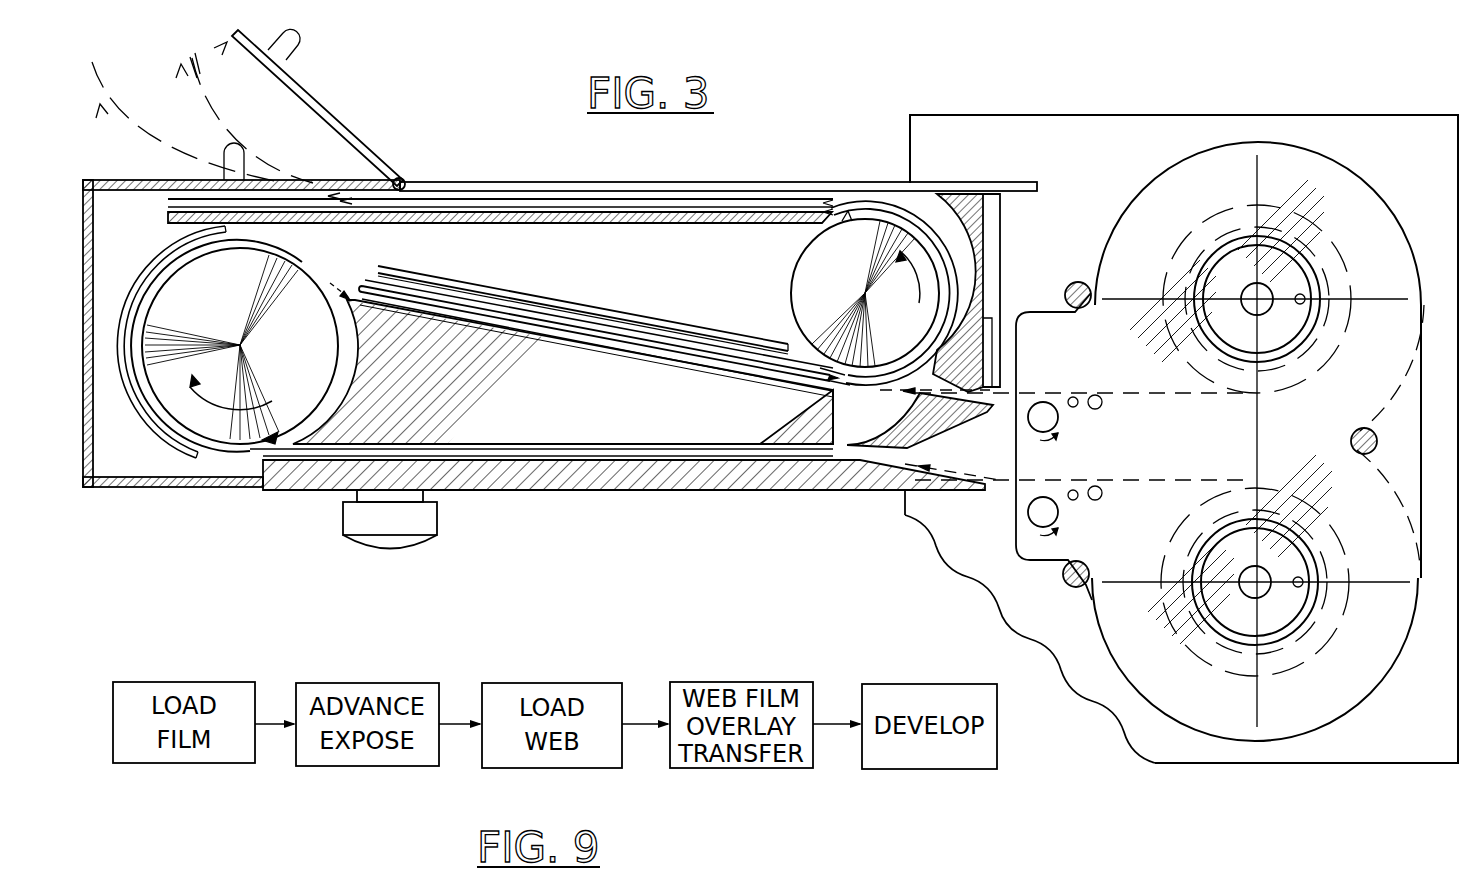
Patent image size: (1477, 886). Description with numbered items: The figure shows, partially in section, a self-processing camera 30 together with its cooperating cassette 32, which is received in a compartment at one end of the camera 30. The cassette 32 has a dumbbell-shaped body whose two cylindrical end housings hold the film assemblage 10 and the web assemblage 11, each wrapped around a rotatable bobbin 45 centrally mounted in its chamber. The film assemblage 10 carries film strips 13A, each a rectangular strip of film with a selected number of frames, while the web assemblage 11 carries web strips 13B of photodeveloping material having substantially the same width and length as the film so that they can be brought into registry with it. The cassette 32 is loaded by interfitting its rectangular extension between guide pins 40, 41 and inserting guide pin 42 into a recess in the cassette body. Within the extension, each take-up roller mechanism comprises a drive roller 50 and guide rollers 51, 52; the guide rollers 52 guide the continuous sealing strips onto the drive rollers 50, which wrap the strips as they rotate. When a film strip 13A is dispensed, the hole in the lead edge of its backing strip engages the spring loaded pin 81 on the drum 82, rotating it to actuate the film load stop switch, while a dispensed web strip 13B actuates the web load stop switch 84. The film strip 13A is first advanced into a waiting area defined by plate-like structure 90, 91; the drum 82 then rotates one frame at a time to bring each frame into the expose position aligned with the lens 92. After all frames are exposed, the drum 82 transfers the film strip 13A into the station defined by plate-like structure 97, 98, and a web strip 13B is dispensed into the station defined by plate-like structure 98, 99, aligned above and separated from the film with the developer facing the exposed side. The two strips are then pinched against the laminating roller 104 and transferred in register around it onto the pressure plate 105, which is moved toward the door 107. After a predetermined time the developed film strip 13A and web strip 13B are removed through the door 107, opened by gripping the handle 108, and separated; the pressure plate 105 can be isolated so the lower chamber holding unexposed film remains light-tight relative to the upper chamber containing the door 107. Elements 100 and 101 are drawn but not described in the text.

The camera 30 is at (835, 108).
The cassette 32 is at (1340, 180).
The film assemblage 10 is at (1172, 480).
The web assemblage 11 is at (1190, 393).
The film strip 13A is at (688, 197).
The web strip 13B is at (648, 225).
The guide pin 40 is at (1073, 283).
The guide pin 41 is at (1074, 588).
The guide pin 42 is at (1372, 440).
The bobbin 45 is at (1260, 272).
The drive roller 50 is at (1058, 422).
The guide roller 51 is at (1072, 397).
The guide roller 52 is at (1094, 395).
The spring loaded pin 81 is at (258, 440).
The drum 82 is at (227, 342).
The web load stop switch 84 is at (350, 282).
The plate-like structure 90 is at (805, 470).
The plate-like structure 91 is at (768, 415).
The lens 92 is at (438, 518).
The plate-like structure 97 is at (368, 318).
The plate-like structure 98 is at (584, 326).
The plate-like structure 99 is at (640, 328).
The entry guide wedge 100 is at (926, 437).
The roller guide 101 is at (904, 214).
The laminating roller 104 is at (790, 287).
The pressure plate 105 is at (468, 208).
The door 107 is at (330, 95).
The handle 108 is at (290, 40).